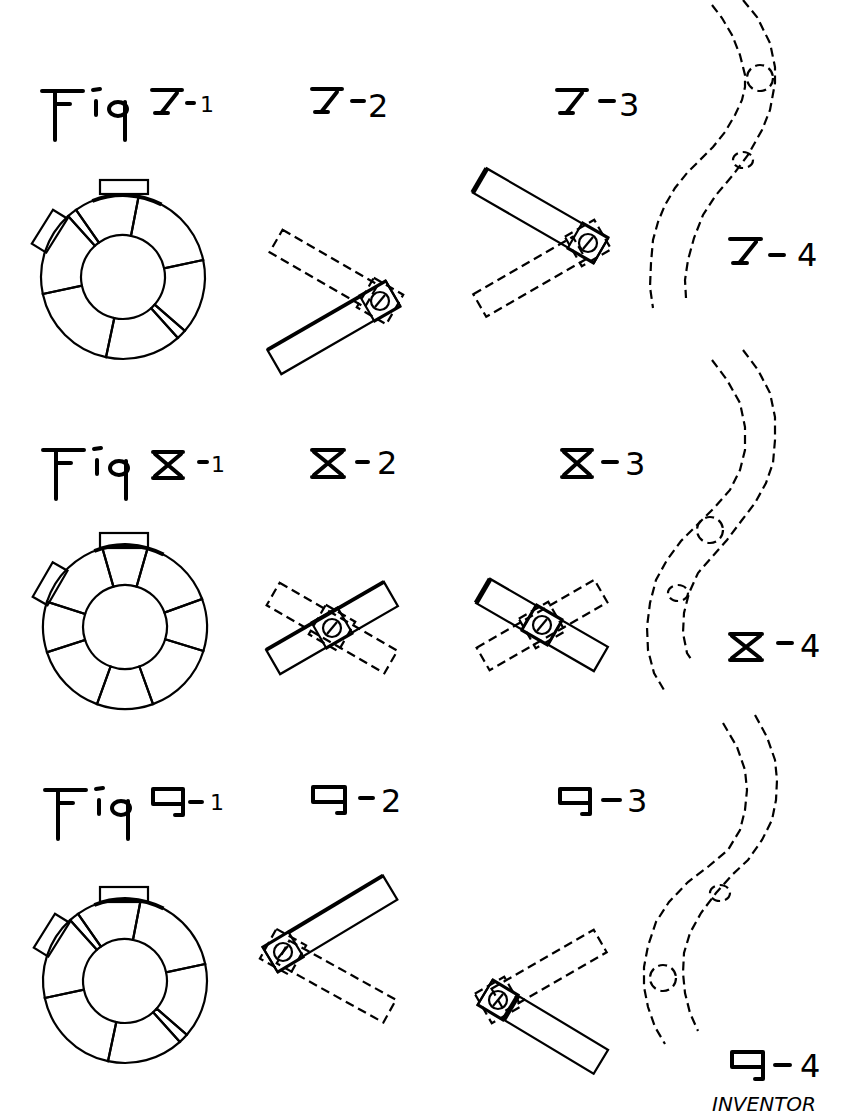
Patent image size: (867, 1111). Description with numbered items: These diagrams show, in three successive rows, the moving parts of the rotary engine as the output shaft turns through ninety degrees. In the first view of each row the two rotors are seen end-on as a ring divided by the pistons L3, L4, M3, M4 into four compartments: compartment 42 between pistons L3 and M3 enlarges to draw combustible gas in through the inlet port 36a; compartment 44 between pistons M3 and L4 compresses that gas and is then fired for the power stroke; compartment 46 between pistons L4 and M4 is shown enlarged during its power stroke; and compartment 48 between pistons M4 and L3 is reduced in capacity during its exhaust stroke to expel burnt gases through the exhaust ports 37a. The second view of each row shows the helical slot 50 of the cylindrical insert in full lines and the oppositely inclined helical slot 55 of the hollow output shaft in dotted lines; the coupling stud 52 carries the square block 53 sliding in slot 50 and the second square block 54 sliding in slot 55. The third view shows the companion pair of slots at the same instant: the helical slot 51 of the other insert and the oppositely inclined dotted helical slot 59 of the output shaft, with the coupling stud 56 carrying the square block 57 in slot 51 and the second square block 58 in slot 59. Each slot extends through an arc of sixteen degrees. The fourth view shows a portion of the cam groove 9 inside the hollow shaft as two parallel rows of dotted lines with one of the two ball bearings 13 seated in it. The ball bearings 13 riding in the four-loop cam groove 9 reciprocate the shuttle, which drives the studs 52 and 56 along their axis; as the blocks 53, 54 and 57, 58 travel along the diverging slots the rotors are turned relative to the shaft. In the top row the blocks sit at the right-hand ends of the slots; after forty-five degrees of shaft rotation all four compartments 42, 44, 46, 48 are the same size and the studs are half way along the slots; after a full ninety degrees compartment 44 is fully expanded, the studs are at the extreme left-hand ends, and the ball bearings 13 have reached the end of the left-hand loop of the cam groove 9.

In FIG. 7-4, the cam groove 9 is at (750, 168).
In FIG. 8-4, the cam groove 9 is at (688, 603).
In FIG. 9-4, the cam groove 9 is at (730, 900).
In FIG. 7-4, the ball bearings 13 is at (773, 90).
In FIG. 8-4, the ball bearings 13 is at (722, 540).
In FIG. 9-4, the ball bearings 13 is at (676, 990).
In FIG. 7-1, the inlet port 36a is at (145, 175).
In FIG. 8-1, the inlet port 36a is at (151, 533).
In FIG. 9-1, the inlet port 36a is at (149, 885).
In FIG. 7-1, the exhaust ports 37a is at (49, 214).
In FIG. 8-1, the exhaust ports 37a is at (57, 567).
In FIG. 9-1, the exhaust ports 37a is at (61, 918).
In FIG. 7-1, the compartment 42 is at (167, 233).
In FIG. 8-1, the compartment 42 is at (186, 625).
In FIG. 9-1, the compartment 42 is at (191, 1041).
In FIG. 7-1, the compartment 44 is at (189, 335).
In FIG. 8-1, the compartment 44 is at (125, 688).
In FIG. 9-1, the compartment 44 is at (81, 1025).
In FIG. 7-1, the compartment 46 is at (79, 322).
In FIG. 8-1, the compartment 46 is at (64, 627).
In FIG. 9-1, the compartment 46 is at (94, 900).
In FIG. 7-1, the compartment 48 is at (81, 196).
In FIG. 8-1, the compartment 48 is at (124, 566).
In FIG. 9-1, the compartment 48 is at (169, 937).
In FIG. 7-1, the piston L3 is at (107, 219).
In FIG. 8-1, the piston L3 is at (170, 580).
In FIG. 9-1, the piston L3 is at (182, 999).
In FIG. 7-1, the piston L4 is at (142, 333).
In FIG. 8-1, the piston L4 is at (79, 672).
In FIG. 9-1, the piston L4 is at (70, 959).
In FIG. 7-1, the piston M3 is at (180, 295).
In FIG. 8-1, the piston M3 is at (171, 671).
In FIG. 9-1, the piston M3 is at (144, 1037).
In FIG. 7-1, the piston M4 is at (68, 255).
In FIG. 8-1, the piston M4 is at (80, 581).
In FIG. 9-1, the piston M4 is at (109, 923).
In FIG. 7-2, the helical slot 50 is at (333, 338).
In FIG. 8-2, the helical slot 50 is at (352, 628).
In FIG. 9-2, the helical slot 50 is at (330, 923).
In FIG. 7-3, the helical slot 51 is at (540, 215).
In FIG. 8-3, the helical slot 51 is at (542, 611).
In FIG. 9-3, the helical slot 51 is at (543, 1033).
In FIG. 7-2, the coupling stud 52 is at (386, 331).
In FIG. 8-2, the coupling stud 52 is at (318, 658).
In FIG. 9-2, the coupling stud 52 is at (266, 935).
In FIG. 7-2, the square block 53 is at (402, 311).
In FIG. 8-2, the square block 53 is at (350, 599).
In FIG. 9-2, the square block 53 is at (262, 953).
In FIG. 7-2, the second square block 54 is at (394, 291).
In FIG. 8-2, the second square block 54 is at (343, 651).
In FIG. 9-2, the second square block 54 is at (283, 966).
In FIG. 7-2, the helical slot 55 is at (324, 266).
In FIG. 8-2, the helical slot 55 is at (332, 612).
In FIG. 9-2, the helical slot 55 is at (336, 995).
In FIG. 7-3, the coupling stud 56 is at (582, 270).
In FIG. 8-3, the coupling stud 56 is at (525, 657).
In FIG. 9-3, the coupling stud 56 is at (487, 980).
In FIG. 7-3, the square block 57 is at (604, 232).
In FIG. 8-3, the square block 57 is at (550, 598).
In FIG. 9-3, the square block 57 is at (479, 999).
In FIG. 7-3, the second square block 58 is at (605, 259).
In FIG. 8-3, the second square block 58 is at (551, 650).
In FIG. 9-3, the second square block 58 is at (498, 1015).
In FIG. 7-3, the helical slot 59 is at (529, 285).
In FIG. 8-3, the helical slot 59 is at (557, 625).
In FIG. 9-3, the helical slot 59 is at (549, 965).